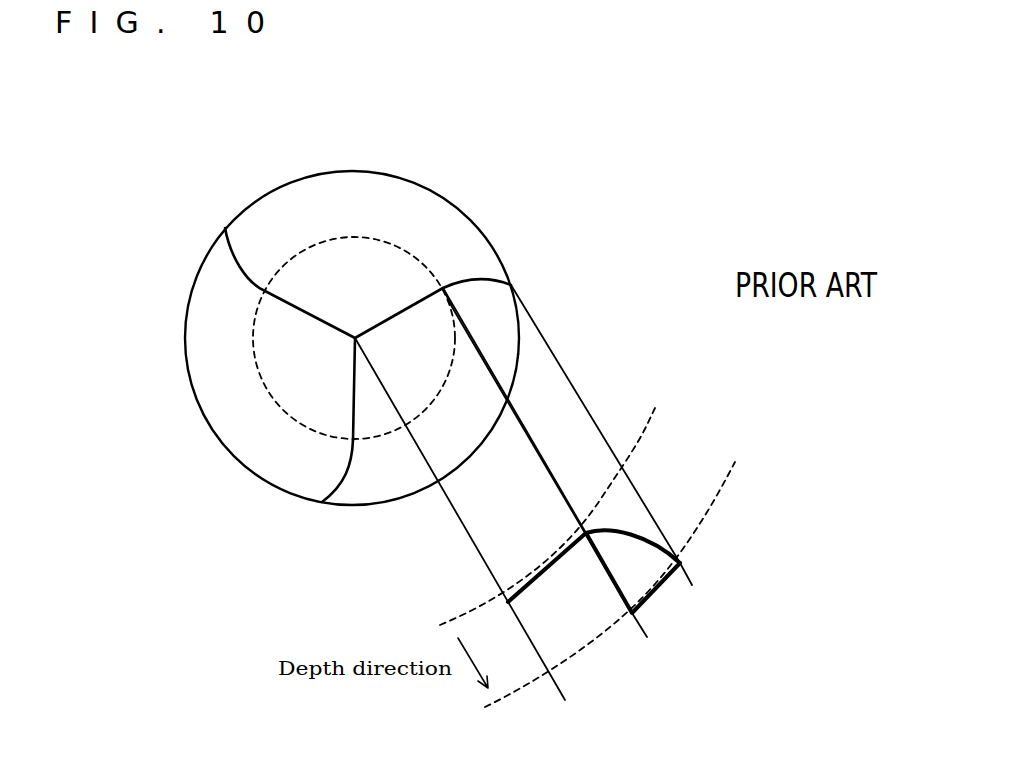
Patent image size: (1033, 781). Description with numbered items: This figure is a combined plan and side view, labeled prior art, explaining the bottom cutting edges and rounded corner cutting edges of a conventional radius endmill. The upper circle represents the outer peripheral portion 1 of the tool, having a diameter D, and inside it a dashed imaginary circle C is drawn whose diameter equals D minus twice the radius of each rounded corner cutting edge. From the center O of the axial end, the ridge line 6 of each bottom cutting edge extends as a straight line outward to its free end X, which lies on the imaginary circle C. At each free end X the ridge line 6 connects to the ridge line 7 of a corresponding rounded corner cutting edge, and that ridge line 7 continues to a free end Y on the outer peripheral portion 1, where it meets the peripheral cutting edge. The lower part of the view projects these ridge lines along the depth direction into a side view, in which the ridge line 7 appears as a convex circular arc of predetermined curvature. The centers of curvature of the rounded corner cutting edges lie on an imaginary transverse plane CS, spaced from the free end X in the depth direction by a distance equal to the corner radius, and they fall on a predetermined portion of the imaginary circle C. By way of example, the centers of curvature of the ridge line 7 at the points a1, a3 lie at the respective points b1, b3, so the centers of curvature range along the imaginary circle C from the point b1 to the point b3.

The outer peripheral portion 1 is at (362, 172).
The ridge line of bottom cutting edge 6 is at (318, 317).
The ridge line of rounded corner cutting edge 7 is at (236, 267).
The free end X is at (443, 287).
The free end Y is at (225, 228).
The rotation center O is at (508, 602).
The imaginary circle C is at (253, 360).
The imaginary transverse plane CS is at (583, 660).
The point on ridge line a1 is at (443, 288).
The point on ridge line a3 is at (511, 285).
The center of curvature point b1 is at (443, 288).
The center of curvature point b3 is at (452, 307).